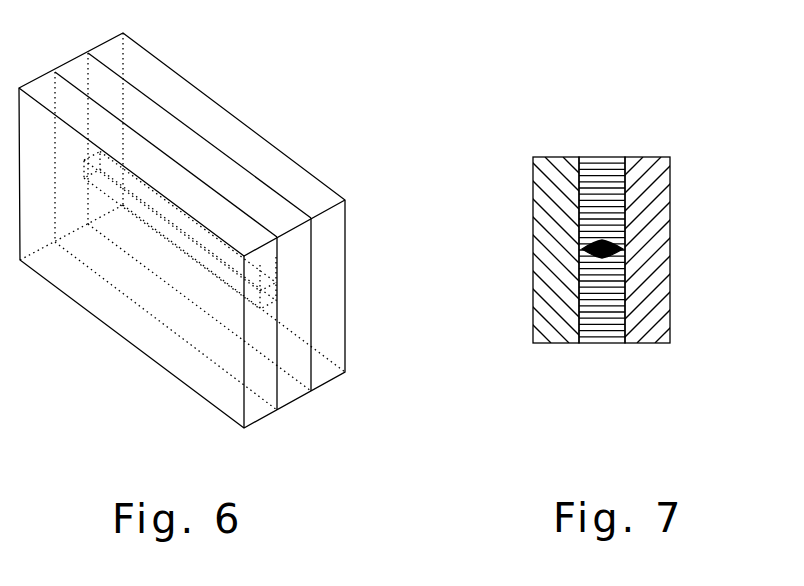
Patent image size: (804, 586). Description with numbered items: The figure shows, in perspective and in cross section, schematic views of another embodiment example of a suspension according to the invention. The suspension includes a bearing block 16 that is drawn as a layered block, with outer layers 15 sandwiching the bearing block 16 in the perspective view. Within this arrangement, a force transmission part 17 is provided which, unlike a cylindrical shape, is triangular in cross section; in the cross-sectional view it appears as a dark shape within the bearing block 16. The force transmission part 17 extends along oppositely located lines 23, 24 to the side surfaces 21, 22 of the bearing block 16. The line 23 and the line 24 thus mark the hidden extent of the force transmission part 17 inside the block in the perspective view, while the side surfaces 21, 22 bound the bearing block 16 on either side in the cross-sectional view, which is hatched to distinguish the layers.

In FIG. 6, the outer layer 15 is at (152, 163).
In FIG. 6, the bearing block 16 is at (147, 117).
In FIG. 7, the bearing block 16 is at (608, 185).
In FIG. 7, the force transmission part 17 is at (600, 258).
In FIG. 7, the side surface 21 is at (626, 207).
In FIG. 7, the side surface 22 is at (578, 205).
In FIG. 6, the line 23 is at (209, 270).
In FIG. 6, the line 24 is at (262, 265).